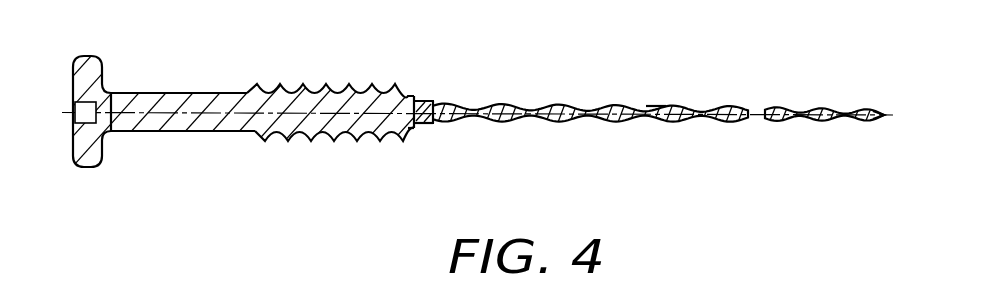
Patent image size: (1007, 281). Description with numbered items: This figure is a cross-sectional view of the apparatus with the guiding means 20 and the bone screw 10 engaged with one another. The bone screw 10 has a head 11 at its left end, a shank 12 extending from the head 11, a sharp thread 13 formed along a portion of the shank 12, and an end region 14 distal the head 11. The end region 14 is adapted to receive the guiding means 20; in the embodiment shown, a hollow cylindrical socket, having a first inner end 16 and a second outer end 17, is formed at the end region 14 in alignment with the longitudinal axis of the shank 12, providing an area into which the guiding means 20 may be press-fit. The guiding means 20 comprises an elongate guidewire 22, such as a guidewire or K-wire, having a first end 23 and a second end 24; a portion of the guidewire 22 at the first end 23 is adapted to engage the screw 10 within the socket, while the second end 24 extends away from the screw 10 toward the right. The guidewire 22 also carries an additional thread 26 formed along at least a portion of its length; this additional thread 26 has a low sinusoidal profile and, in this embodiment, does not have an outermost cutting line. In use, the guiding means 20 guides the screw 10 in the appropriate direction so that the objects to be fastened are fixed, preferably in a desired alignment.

The bone screw 10 is at (210, 60).
The head 11 is at (84, 167).
The shank 12 is at (192, 132).
The sharp thread 13 is at (283, 142).
The end region 14 is at (437, 78).
The first inner end 16 is at (410, 131).
The second outer end 17 is at (437, 126).
The guiding means 20 is at (729, 81).
The elongate guidewire 22 is at (683, 121).
The first end 23 is at (447, 101).
The second end 24 is at (877, 113).
The additional thread 26 is at (659, 105).